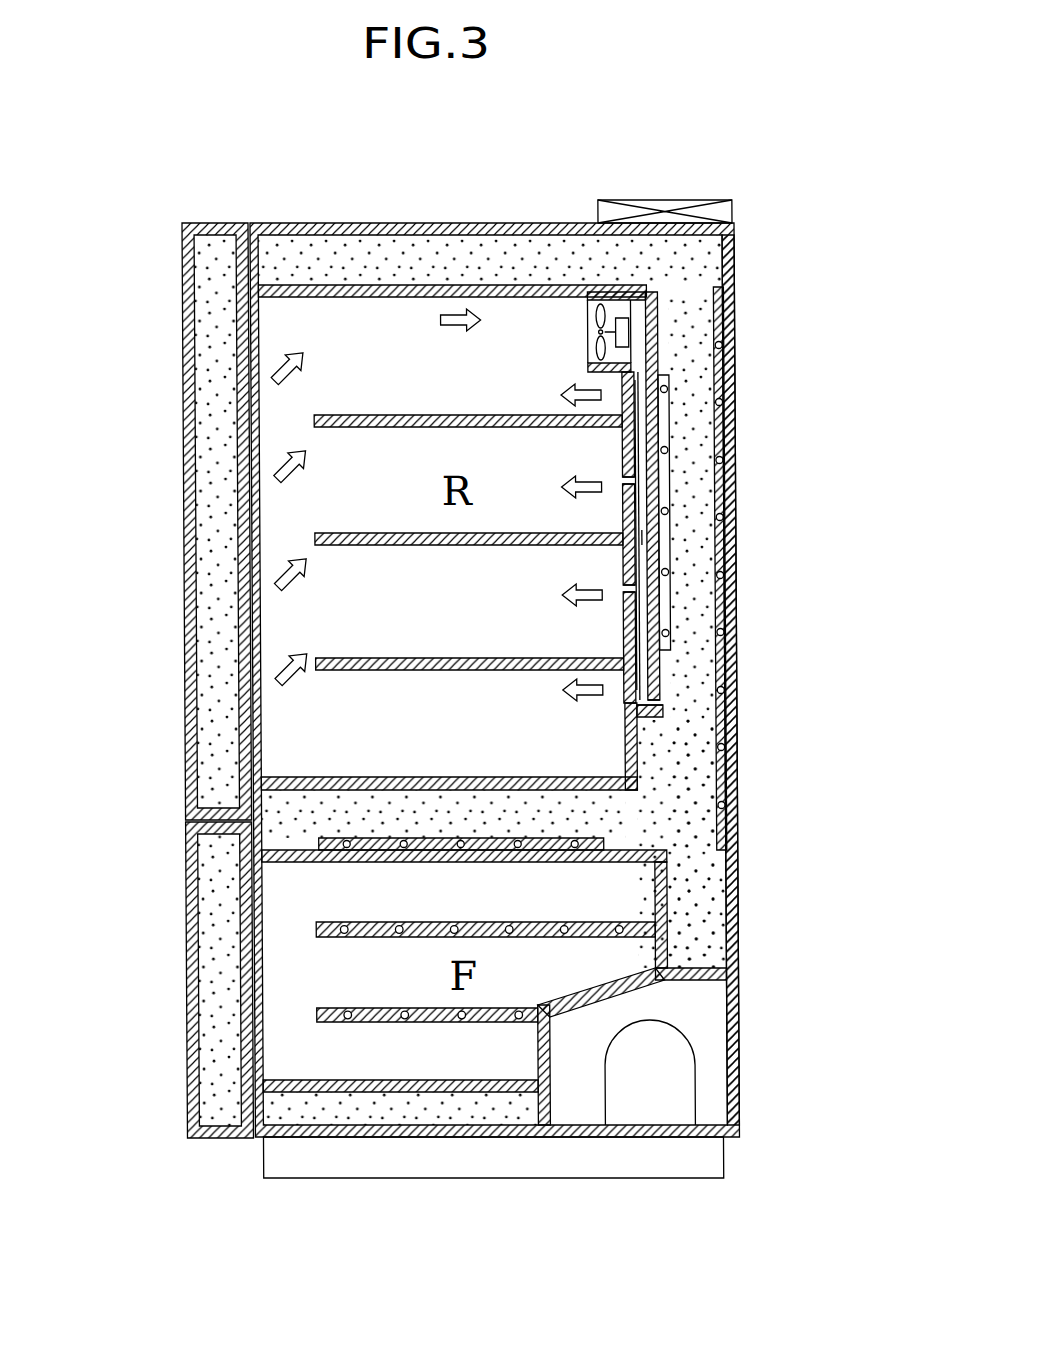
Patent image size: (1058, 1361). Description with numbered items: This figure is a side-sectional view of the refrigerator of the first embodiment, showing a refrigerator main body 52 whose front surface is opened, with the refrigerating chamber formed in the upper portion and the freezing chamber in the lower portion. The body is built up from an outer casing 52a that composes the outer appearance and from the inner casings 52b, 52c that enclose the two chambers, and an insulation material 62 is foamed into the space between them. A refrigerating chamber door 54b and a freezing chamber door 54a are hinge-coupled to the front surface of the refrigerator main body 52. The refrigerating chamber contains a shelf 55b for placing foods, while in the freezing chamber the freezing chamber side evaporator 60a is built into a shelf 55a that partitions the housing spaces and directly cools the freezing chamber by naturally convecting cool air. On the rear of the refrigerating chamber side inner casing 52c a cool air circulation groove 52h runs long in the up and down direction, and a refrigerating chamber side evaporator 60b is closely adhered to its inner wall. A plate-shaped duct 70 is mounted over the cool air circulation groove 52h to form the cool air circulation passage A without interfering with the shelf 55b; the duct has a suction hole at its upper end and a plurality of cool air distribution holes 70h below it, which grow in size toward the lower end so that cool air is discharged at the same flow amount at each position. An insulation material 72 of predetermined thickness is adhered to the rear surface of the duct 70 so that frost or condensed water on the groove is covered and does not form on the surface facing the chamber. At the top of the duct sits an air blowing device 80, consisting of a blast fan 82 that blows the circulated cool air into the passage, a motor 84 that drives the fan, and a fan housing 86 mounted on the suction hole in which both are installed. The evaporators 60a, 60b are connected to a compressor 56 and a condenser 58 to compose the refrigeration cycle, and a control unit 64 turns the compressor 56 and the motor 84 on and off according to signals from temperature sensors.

The refrigerator main body 52 is at (401, 215).
The insulation material 62 is at (513, 228).
The control unit 64 is at (665, 207).
The refrigerating chamber door 54b is at (184, 443).
The freezing chamber door 54a is at (186, 945).
The shelf 55b is at (318, 537).
The freezing compartment shelves 55a is at (318, 1013).
The condenser 58 is at (717, 628).
The outer casing 52a is at (733, 663).
The inner casing 52b is at (657, 883).
The refrigerating chamber side inner casing 52c is at (635, 750).
The cool air circulation groove 52h is at (656, 697).
The air blowing device 80 is at (736, 302).
The blast fan 82 is at (640, 296).
The motor 84 is at (628, 332).
The fan housing 86 is at (640, 354).
The duct 70 is at (630, 408).
The cool air distribution holes 70h is at (628, 478).
The insulation material 72 is at (640, 434).
The cool air circulation passage A is at (642, 537).
The refrigerating chamber side evaporator 60b is at (667, 585).
The freezing chamber side evaporator 60a is at (647, 928).
The compressor 56 is at (675, 1070).